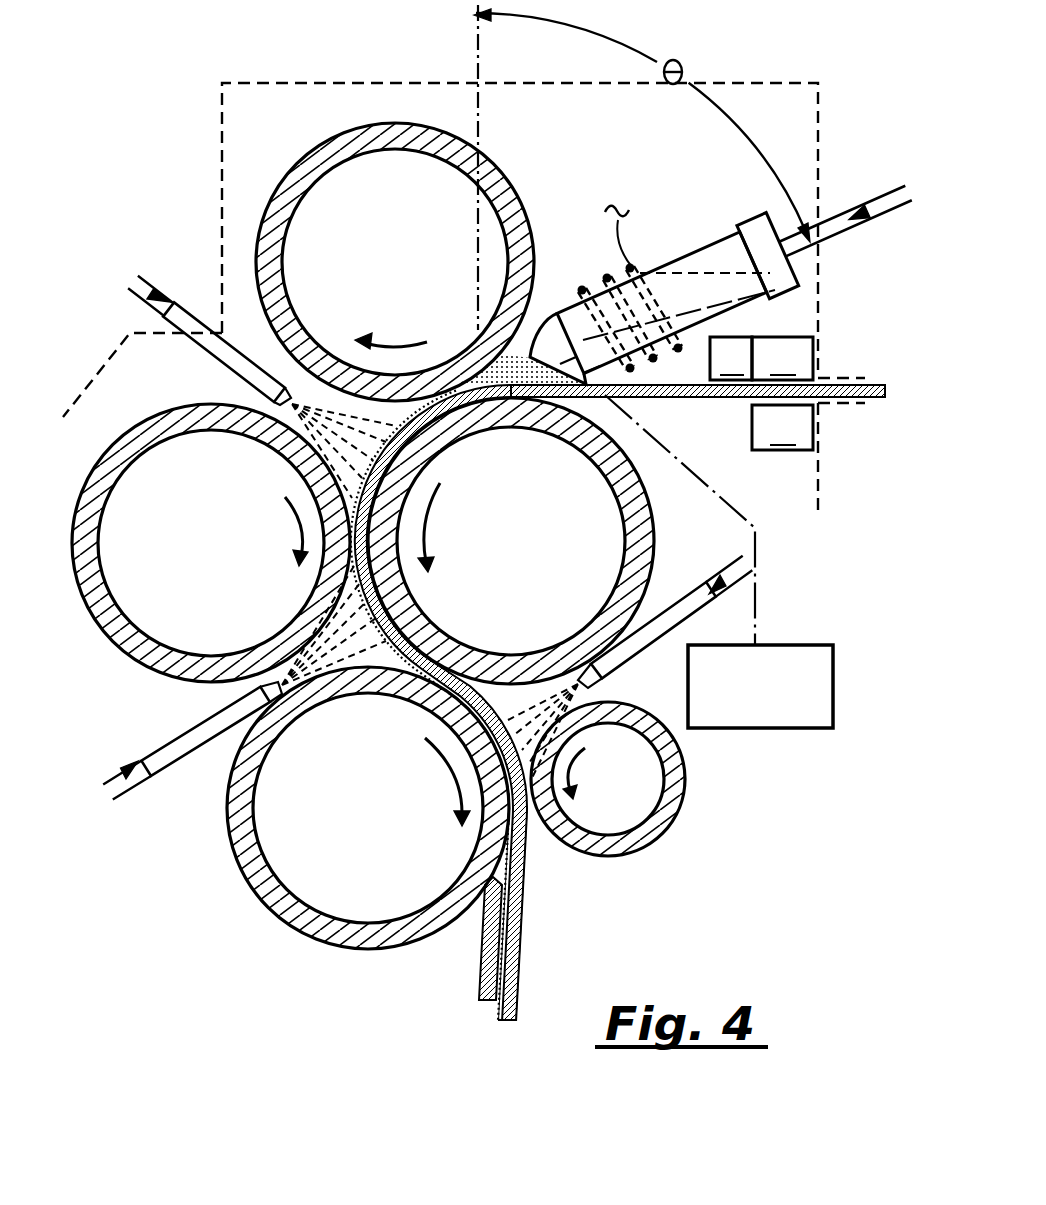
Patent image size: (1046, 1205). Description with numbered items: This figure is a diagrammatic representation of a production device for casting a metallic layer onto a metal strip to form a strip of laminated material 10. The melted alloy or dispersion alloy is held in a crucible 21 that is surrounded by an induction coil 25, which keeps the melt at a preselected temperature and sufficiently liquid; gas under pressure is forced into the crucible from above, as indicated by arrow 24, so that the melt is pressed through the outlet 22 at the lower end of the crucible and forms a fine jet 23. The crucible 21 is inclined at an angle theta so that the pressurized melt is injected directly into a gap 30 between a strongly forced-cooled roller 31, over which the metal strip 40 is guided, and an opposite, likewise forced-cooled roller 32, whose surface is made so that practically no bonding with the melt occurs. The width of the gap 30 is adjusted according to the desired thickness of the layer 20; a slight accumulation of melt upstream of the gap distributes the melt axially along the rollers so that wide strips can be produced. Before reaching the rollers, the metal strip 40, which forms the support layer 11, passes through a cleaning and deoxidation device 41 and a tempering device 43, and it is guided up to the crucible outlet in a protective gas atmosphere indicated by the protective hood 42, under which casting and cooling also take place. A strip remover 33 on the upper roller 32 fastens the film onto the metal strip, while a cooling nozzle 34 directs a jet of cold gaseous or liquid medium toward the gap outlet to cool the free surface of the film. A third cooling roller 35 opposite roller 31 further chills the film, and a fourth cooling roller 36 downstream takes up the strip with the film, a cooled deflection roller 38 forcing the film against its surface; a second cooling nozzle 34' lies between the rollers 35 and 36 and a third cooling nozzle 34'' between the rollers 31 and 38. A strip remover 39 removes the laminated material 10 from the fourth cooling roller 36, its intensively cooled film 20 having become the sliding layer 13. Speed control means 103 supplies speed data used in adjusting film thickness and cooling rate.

The strip of laminated material 10 is at (509, 1030).
The support layer 11 is at (518, 994).
The sliding layer 13 is at (497, 1012).
The layer 20 is at (350, 580).
The crucible 21 is at (722, 252).
The outlet 22 is at (552, 318).
The jet 23 is at (490, 299).
The arrow 24 is at (891, 201).
The induction coil 25 is at (606, 275).
The gap 30 is at (462, 386).
The roller 31 is at (641, 513).
The roller 32 is at (323, 157).
The strip remover 33 is at (380, 418).
The cooling nozzle 34 is at (241, 340).
The second cooling nozzle 34' is at (192, 709).
The third cooling nozzle 34'' is at (659, 622).
The third cooling roller 35 is at (137, 437).
The fourth cooling roller 36 is at (272, 893).
The deflection roller 38 is at (640, 836).
The strip remover 39 is at (478, 986).
The metal strip 40 is at (685, 398).
The cleaning and deoxidation device 41 is at (731, 358).
The protective hood 42 is at (746, 76).
The tempering device 43 is at (782, 393).
The speed control means 103 is at (804, 716).